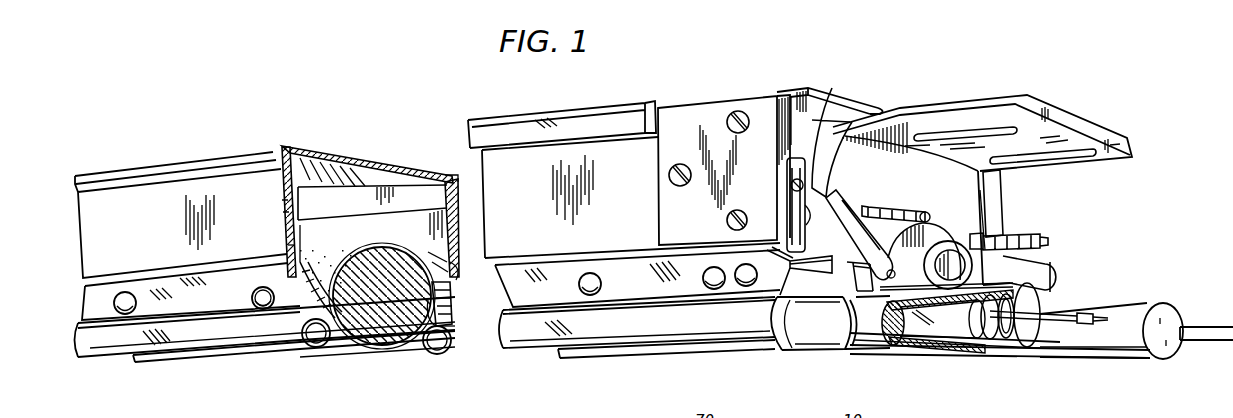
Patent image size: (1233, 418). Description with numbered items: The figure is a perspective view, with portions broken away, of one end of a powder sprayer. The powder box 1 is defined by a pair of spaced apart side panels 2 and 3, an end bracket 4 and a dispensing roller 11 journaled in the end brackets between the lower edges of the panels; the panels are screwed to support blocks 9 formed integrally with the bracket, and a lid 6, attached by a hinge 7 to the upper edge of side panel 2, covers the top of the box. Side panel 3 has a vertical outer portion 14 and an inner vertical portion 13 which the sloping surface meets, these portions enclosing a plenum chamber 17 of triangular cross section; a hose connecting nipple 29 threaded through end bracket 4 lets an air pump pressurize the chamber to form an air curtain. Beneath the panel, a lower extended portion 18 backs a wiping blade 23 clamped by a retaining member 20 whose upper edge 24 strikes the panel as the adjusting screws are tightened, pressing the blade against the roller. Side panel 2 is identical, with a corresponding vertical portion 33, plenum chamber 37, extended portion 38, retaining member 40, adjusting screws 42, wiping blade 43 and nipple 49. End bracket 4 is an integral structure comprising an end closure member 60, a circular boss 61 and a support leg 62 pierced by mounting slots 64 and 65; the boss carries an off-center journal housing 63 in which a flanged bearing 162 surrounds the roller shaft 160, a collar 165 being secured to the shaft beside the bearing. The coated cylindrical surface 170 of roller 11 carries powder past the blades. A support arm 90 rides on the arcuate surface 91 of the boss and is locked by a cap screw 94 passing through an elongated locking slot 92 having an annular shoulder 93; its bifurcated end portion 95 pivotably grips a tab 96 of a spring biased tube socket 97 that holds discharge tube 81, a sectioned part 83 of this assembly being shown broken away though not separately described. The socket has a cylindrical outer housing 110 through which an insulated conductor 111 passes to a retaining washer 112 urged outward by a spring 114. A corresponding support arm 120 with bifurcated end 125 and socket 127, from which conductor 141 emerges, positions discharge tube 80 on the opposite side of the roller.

The powder box 1 is at (286, 234).
The side panel 2 is at (467, 231).
The side panel 3 is at (280, 253).
The end bracket 4 is at (990, 190).
The lid 6 is at (356, 168).
The rail corner 7 is at (452, 176).
The support blocks 9 is at (757, 104).
The dispensing roller 11 is at (374, 350).
The vertical portion 13 is at (457, 270).
The vertical outer portion 14 is at (436, 252).
The plenum chamber 17 is at (446, 264).
The lower extended portion 18 is at (445, 306).
The retaining member 20 is at (454, 297).
The wiping blade 23 is at (446, 320).
The upper edge 24 is at (312, 220).
The hose connecting nipple 29 is at (1028, 238).
The vertical portion 33 is at (282, 213).
The plenum chamber 37 is at (318, 241).
The lower extended portion 38 is at (280, 299).
The retaining member 40 is at (218, 290).
The adjusting screws 42 is at (130, 292).
The wiping blade 43 is at (609, 296).
The hose connecting nipple 49 is at (899, 208).
The end closure member 60 is at (818, 112).
The circular boss 61 is at (994, 212).
The support leg 62 is at (988, 100).
The journal housing 63 is at (972, 189).
The slot 64 is at (1006, 138).
The slot 65 is at (1070, 162).
The discharge tube 80 is at (250, 360).
The discharge tube 81 is at (178, 358).
The piston cylinder 83 is at (935, 346).
The support arm 90 is at (838, 207).
The arcuate surface 91 is at (823, 145).
The locking slot 92 is at (790, 203).
The annular shoulder 93 is at (807, 214).
The cap screw 94 is at (784, 189).
The bifurcated end portion 95 is at (832, 277).
The tab 96 is at (853, 262).
The spring biased tube socket 97 is at (870, 356).
The outer housing 110 is at (810, 346).
The insulated conductor 111 is at (1068, 302).
The retaining washer 112 is at (985, 340).
The spring 114 is at (1012, 338).
The support arm 120 is at (1050, 270).
The bifurcated end portion 125 is at (1056, 296).
The spring biased tube socket 127 is at (1128, 302).
The conductor 141 is at (1213, 320).
The shaft 160 is at (960, 270).
The flanged bearing 162 is at (947, 200).
The collar 165 is at (950, 244).
The cylindrical surface 170 is at (348, 258).